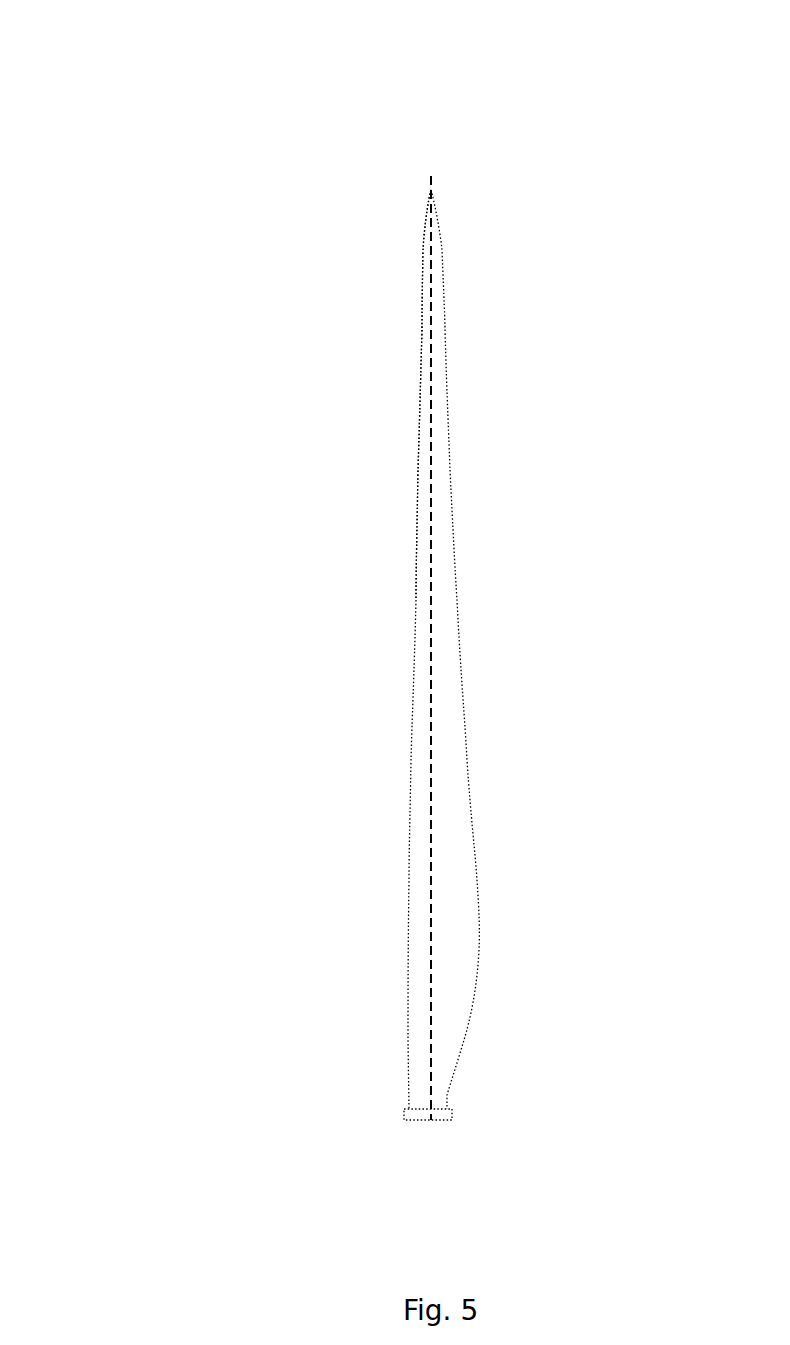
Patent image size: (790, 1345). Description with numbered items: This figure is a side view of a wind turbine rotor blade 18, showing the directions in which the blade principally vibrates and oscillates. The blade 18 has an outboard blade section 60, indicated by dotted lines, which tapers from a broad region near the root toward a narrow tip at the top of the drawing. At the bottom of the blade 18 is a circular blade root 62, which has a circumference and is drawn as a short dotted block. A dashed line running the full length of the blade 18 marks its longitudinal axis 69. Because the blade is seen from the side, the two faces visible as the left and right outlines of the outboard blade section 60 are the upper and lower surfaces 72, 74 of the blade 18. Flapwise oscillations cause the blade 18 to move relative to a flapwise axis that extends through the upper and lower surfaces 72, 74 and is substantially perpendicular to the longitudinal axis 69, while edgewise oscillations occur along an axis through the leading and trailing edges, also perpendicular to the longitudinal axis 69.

The rotor blade 18 is at (163, 94).
The outboard blade section 60 is at (496, 233).
The upper surface 72 is at (386, 318).
The lower surface 74 is at (473, 496).
The longitudinal axis 69 is at (442, 802).
The circular blade root 62 is at (488, 1096).